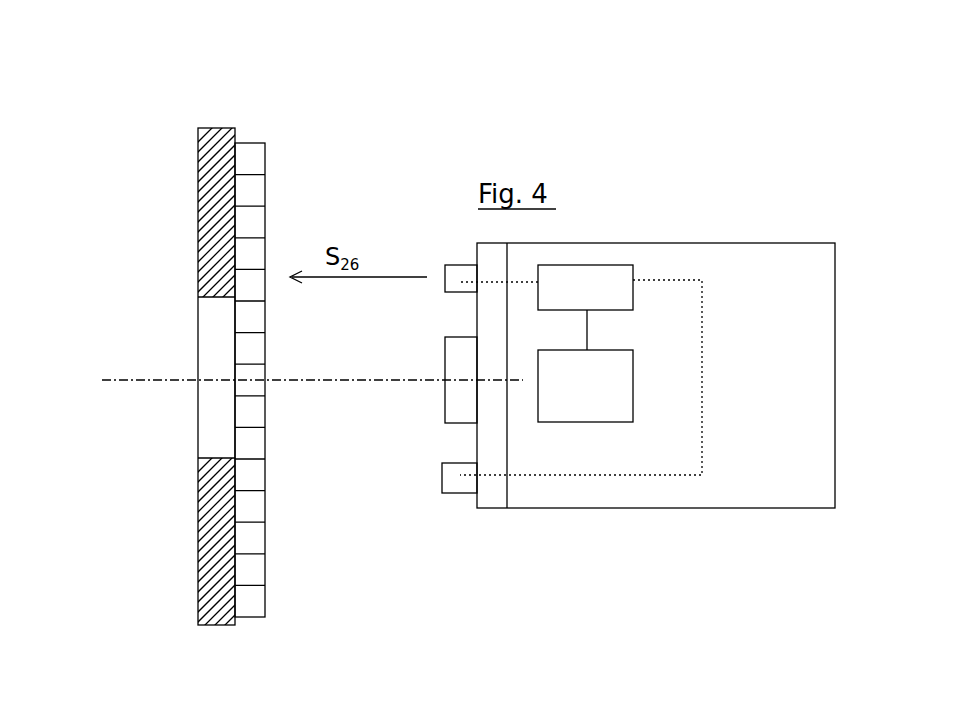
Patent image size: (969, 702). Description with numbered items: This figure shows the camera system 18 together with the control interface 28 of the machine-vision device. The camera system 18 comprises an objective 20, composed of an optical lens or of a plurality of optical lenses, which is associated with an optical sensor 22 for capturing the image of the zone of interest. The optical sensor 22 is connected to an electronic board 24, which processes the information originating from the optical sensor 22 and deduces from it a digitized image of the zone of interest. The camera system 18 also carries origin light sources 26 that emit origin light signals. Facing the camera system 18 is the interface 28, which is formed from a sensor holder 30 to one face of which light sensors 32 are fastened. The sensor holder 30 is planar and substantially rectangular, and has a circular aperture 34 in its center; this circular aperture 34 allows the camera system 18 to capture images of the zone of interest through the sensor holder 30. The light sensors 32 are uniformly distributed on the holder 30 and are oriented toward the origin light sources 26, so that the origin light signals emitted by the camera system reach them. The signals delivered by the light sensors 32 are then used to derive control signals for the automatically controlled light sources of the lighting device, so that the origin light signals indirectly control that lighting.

The camera system 18 is at (597, 333).
The objective 20 is at (445, 400).
The optical sensor 22 is at (585, 366).
The electronic board 24 is at (585, 287).
The origin light sources 26 is at (443, 272).
The interface 28 is at (214, 124).
The sensor holder 30 is at (196, 229).
The light sensors 32 is at (256, 411).
The circular aperture 34 is at (184, 380).